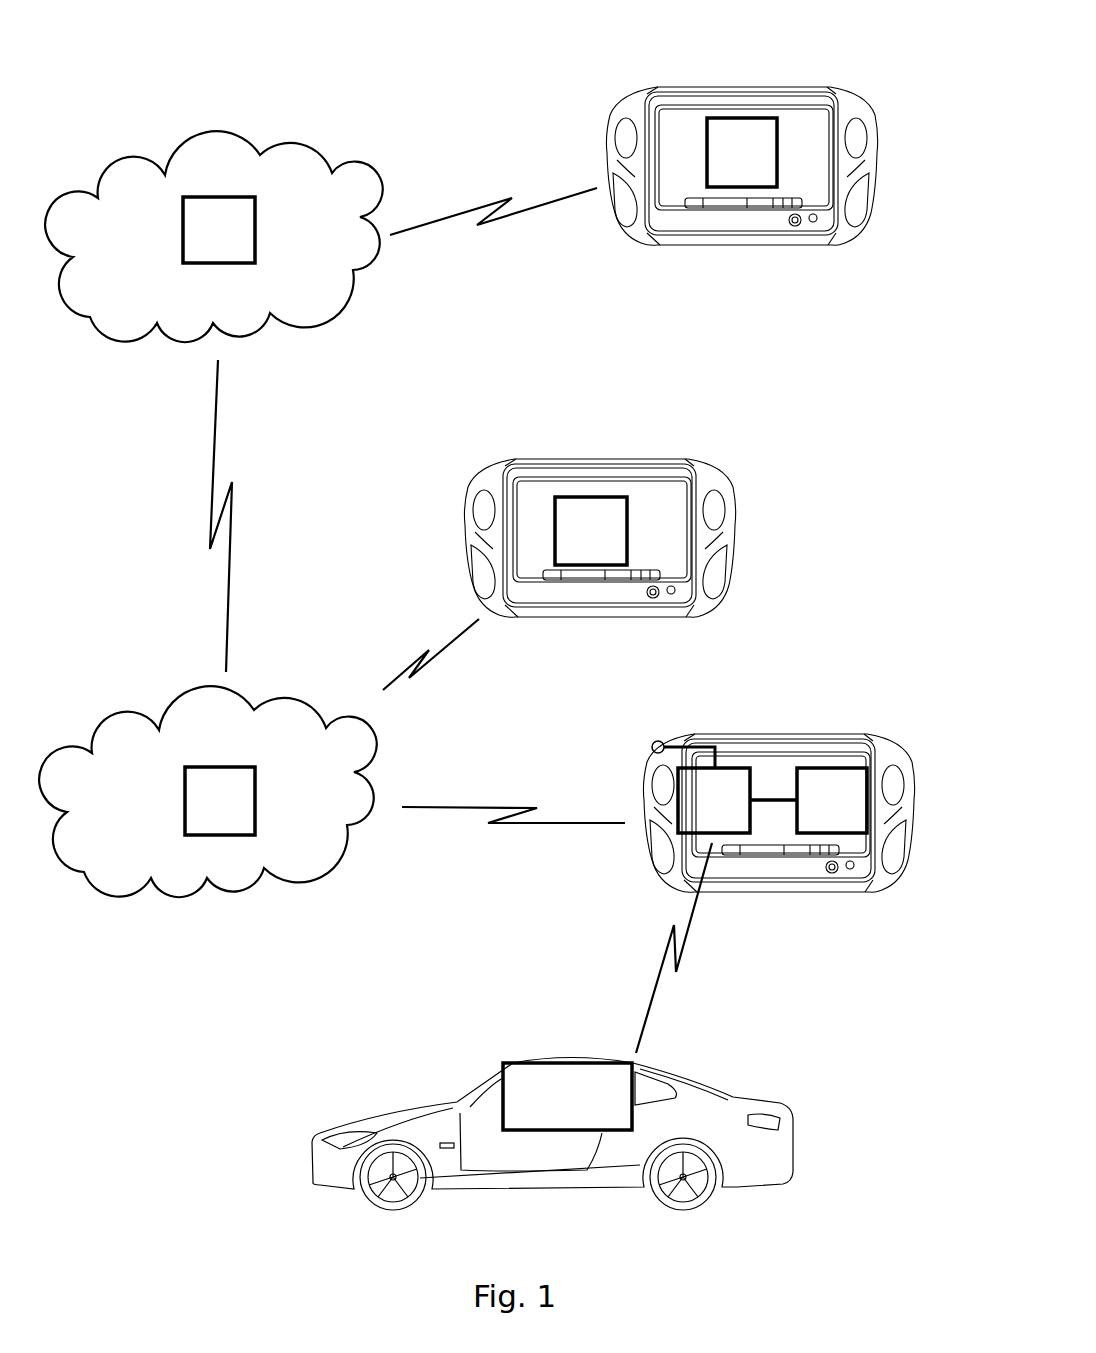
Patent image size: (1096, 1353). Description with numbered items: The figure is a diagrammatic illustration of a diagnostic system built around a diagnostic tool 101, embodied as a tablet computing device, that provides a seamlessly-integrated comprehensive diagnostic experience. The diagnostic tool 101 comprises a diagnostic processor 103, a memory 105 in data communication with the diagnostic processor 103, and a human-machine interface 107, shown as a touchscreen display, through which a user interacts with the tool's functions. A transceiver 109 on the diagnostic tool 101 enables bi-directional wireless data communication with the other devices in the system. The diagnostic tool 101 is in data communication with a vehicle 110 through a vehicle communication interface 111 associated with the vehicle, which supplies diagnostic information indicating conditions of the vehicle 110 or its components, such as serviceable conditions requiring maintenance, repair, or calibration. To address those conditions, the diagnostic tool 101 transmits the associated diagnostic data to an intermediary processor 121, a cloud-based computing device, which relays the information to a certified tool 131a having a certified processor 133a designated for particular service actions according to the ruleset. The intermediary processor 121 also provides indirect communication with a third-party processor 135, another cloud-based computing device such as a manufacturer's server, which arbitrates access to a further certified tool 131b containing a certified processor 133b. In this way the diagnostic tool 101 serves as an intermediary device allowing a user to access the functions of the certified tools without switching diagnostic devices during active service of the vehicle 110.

The diagnostic tool 101 is at (890, 750).
The diagnostic processor 103 is at (696, 812).
The memory 105 is at (814, 812).
The human-machine interface (HMI) 107 is at (783, 765).
The transceiver 109 is at (665, 744).
The vehicle 110 is at (689, 1110).
The vehicle communication interface (VCI) 111 is at (549, 1109).
The intermediary processor 121 is at (202, 812).
The certified tool 131a is at (706, 474).
The certified tool 131b is at (853, 102).
The certified processor 133a is at (567, 542).
The certified processor 133b is at (718, 164).
The third-party processor 135 is at (201, 242).